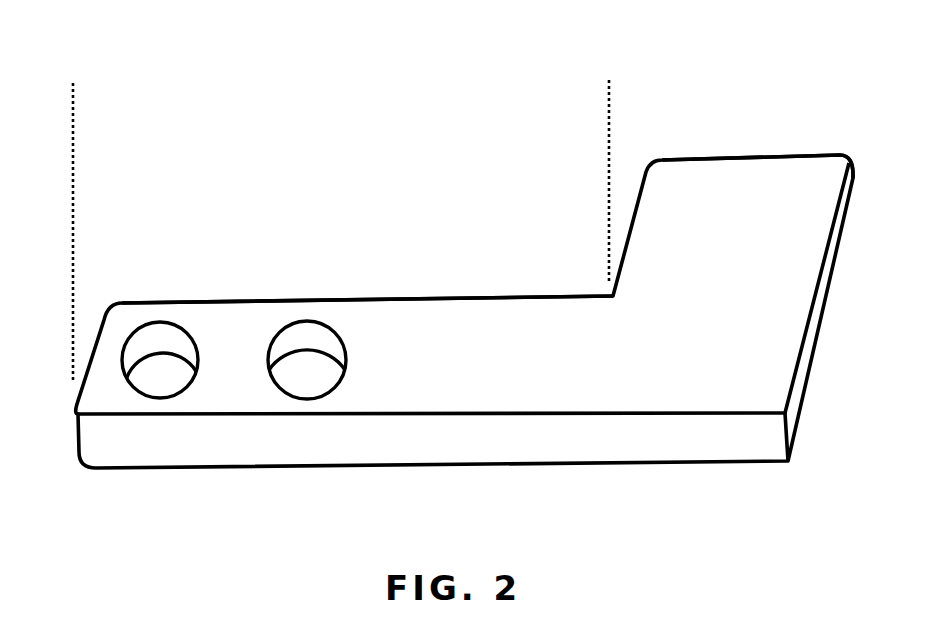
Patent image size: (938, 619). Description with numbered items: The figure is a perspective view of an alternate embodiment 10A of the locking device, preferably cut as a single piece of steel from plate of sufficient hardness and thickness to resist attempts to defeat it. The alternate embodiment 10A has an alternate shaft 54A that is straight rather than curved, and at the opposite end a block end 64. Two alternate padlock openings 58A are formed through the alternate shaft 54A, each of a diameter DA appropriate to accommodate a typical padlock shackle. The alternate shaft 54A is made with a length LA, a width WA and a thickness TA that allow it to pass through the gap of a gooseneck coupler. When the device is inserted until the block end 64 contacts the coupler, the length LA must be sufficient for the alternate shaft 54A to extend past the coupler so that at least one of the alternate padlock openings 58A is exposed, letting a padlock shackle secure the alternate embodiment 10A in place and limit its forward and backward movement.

The alternate embodiment 10A is at (787, 177).
The block end 64 is at (734, 237).
The alternate shaft 54A is at (403, 335).
The alternate padlock openings 58A is at (300, 340).
The length LA is at (608, 91).
The width WA is at (490, 402).
The thickness TA is at (520, 414).
The diameter DA is at (343, 360).